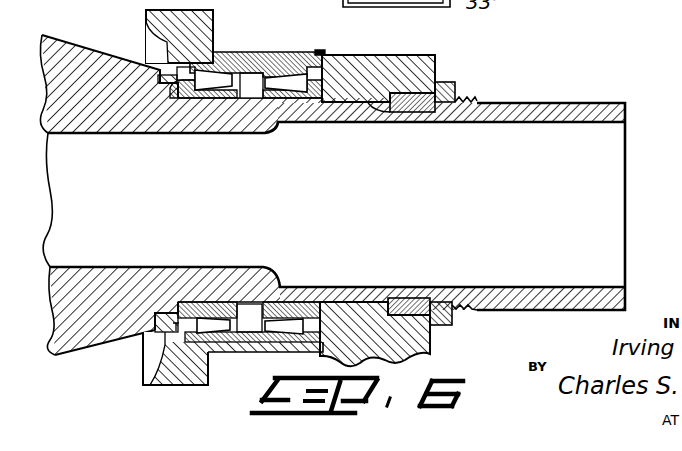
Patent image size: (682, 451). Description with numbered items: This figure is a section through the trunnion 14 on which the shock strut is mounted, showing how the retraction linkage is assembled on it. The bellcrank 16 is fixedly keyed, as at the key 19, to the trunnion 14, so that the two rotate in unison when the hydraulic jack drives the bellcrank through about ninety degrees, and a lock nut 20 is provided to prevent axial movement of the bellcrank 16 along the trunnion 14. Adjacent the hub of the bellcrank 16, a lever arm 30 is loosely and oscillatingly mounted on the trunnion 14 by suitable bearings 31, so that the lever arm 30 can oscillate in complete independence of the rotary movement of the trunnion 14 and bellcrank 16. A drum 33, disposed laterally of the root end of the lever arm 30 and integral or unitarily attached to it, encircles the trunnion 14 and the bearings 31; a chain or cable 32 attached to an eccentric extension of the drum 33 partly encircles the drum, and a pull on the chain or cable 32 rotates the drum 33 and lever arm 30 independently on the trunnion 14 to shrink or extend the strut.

The trunnion 14 is at (595, 103).
The bellcrank 16 is at (435, 65).
The key 19 is at (436, 76).
The lock nut 20 is at (455, 88).
The lever arm 30 is at (180, 25).
The bearings 31 is at (290, 86).
The chain or cable 32 is at (401, 2).
The drum 33 is at (250, 52).